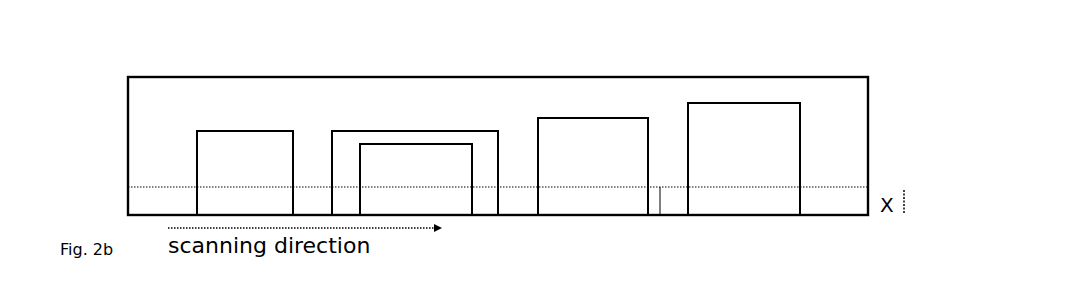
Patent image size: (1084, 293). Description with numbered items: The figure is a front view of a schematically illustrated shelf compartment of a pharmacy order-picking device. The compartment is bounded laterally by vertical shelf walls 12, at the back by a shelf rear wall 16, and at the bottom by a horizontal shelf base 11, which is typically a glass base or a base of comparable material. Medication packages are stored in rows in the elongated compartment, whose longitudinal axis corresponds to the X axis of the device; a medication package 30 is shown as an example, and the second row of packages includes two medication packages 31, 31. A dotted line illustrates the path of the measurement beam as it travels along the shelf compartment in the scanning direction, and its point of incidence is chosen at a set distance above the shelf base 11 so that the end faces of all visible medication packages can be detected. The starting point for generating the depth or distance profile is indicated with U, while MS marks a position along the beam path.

The shelf wall 12 is at (128, 118).
The shelf rear wall 16 is at (305, 104).
The medication package 30 is at (485, 147).
The medication package 31 is at (415, 172).
The shelf base 11 is at (578, 77).
The starting point U is at (128, 187).
The measurement point MS is at (660, 187).